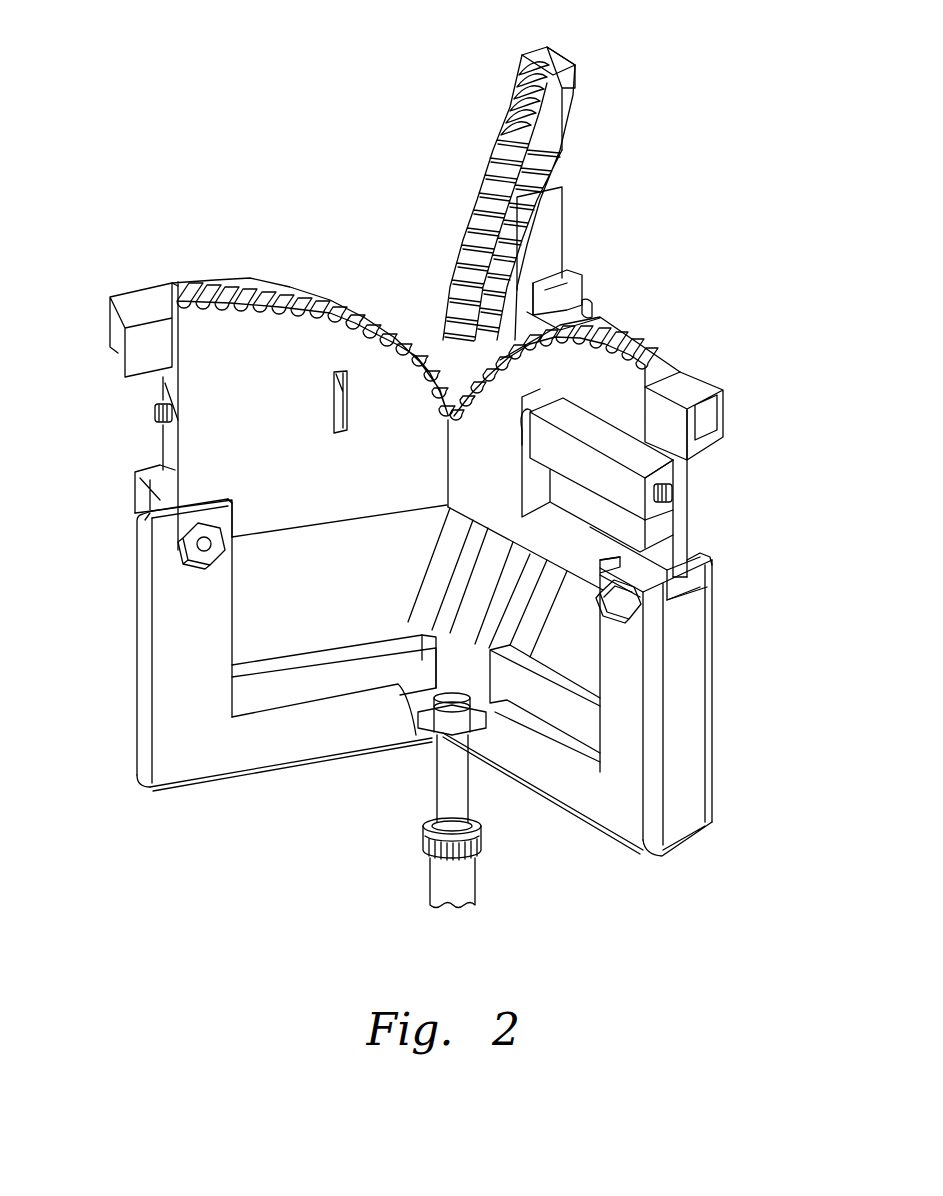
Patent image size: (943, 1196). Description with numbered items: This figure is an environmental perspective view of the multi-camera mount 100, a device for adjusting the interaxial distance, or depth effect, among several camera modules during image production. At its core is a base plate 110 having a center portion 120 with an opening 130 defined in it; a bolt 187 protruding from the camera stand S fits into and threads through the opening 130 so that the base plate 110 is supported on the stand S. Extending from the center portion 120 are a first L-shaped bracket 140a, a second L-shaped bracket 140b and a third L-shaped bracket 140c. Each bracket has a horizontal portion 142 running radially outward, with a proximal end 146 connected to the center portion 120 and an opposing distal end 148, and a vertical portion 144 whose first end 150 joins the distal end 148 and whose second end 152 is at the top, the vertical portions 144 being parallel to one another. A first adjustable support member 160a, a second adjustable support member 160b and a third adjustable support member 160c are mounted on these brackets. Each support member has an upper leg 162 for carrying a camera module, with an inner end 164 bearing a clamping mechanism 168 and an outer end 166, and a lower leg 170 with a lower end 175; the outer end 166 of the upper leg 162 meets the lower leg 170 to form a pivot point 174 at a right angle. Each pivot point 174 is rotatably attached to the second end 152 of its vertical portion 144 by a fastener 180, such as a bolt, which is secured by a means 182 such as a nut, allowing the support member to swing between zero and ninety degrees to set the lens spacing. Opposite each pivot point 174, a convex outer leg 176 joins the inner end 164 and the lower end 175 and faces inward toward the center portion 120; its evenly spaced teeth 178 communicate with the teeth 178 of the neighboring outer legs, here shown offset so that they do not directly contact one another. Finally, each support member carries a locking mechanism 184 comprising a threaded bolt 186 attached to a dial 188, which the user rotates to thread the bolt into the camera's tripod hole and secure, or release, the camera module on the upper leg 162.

The multi-camera mount 100 is at (127, 72).
The base plate 110 is at (352, 775).
The center portion 120 is at (405, 648).
The opening 130 is at (452, 748).
The first L-shaped bracket 140a is at (693, 573).
The second L-shaped bracket 140b is at (135, 480).
The third L-shaped bracket 140c is at (560, 258).
The horizontal portion 142 is at (500, 568).
The vertical portion 144 is at (790, 697).
The proximal end 146 is at (387, 752).
The distal end 148 is at (240, 748).
The first end 150 is at (130, 718).
The second end 152 is at (207, 506).
The first adjustable support member 160a is at (567, 406).
The second adjustable support member 160b is at (310, 414).
The third adjustable support member 160c is at (556, 178).
The upper leg 162 is at (173, 430).
The inner end 164 is at (160, 308).
The outer end 166 is at (688, 531).
The clamping mechanism 168 is at (776, 400).
The lower leg 170 is at (320, 563).
The pivot point 174 is at (160, 480).
The lower end 175 is at (443, 525).
The convex outer leg 176 is at (316, 330).
The teeth 178 is at (465, 210).
The fastener 180 is at (212, 568).
The securing means 182 is at (232, 527).
The locking mechanism 184 is at (349, 435).
The threaded bolt 186 is at (153, 410).
The bolt 187 is at (455, 708).
The dial 188 is at (337, 383).
The camera stand S is at (474, 865).